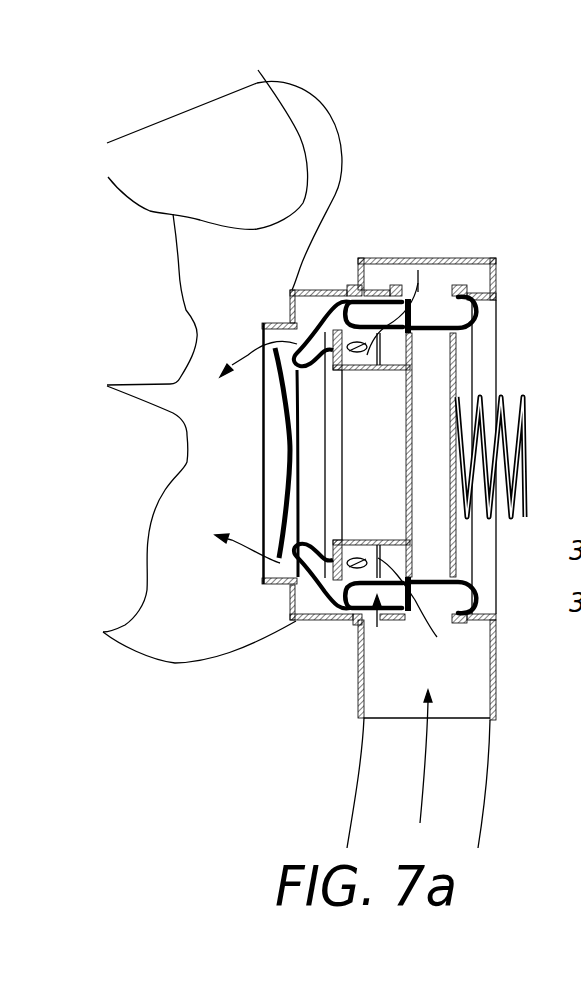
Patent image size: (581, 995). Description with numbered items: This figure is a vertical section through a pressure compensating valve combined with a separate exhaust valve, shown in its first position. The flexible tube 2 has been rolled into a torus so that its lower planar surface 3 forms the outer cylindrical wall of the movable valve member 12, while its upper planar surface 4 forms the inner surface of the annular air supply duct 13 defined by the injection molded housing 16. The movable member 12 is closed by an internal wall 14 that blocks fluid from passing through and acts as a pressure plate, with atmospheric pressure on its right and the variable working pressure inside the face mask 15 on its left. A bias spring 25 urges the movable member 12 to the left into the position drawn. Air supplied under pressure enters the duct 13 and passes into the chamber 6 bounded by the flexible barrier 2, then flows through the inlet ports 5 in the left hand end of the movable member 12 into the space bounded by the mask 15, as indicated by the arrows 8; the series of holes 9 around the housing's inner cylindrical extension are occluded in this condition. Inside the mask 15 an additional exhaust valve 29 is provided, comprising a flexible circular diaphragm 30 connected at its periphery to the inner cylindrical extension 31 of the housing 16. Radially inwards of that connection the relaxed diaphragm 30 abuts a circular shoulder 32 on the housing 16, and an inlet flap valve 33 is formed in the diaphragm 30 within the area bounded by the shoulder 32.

The face mask 15 is at (337, 133).
The holes 9 is at (316, 290).
The annular air supply duct 13 is at (448, 277).
The housing 16 is at (500, 283).
The upper planar surface 4 is at (520, 298).
The lower planar surface 3 is at (478, 329).
The tube 2 is at (476, 360).
The internal wall 14 is at (456, 390).
The bias spring 25 is at (526, 463).
The movable valve member 12 is at (405, 420).
The inlet ports 5 is at (380, 558).
The arrows 8 is at (243, 452).
The exhaust valve 29 is at (262, 438).
The inlet flap valve 33 is at (276, 516).
The circular shoulder 32 is at (263, 590).
The flexible circular diaphragm 30 is at (298, 603).
The inner cylindrical extension 31 is at (300, 632).
The chamber 6 is at (377, 628).